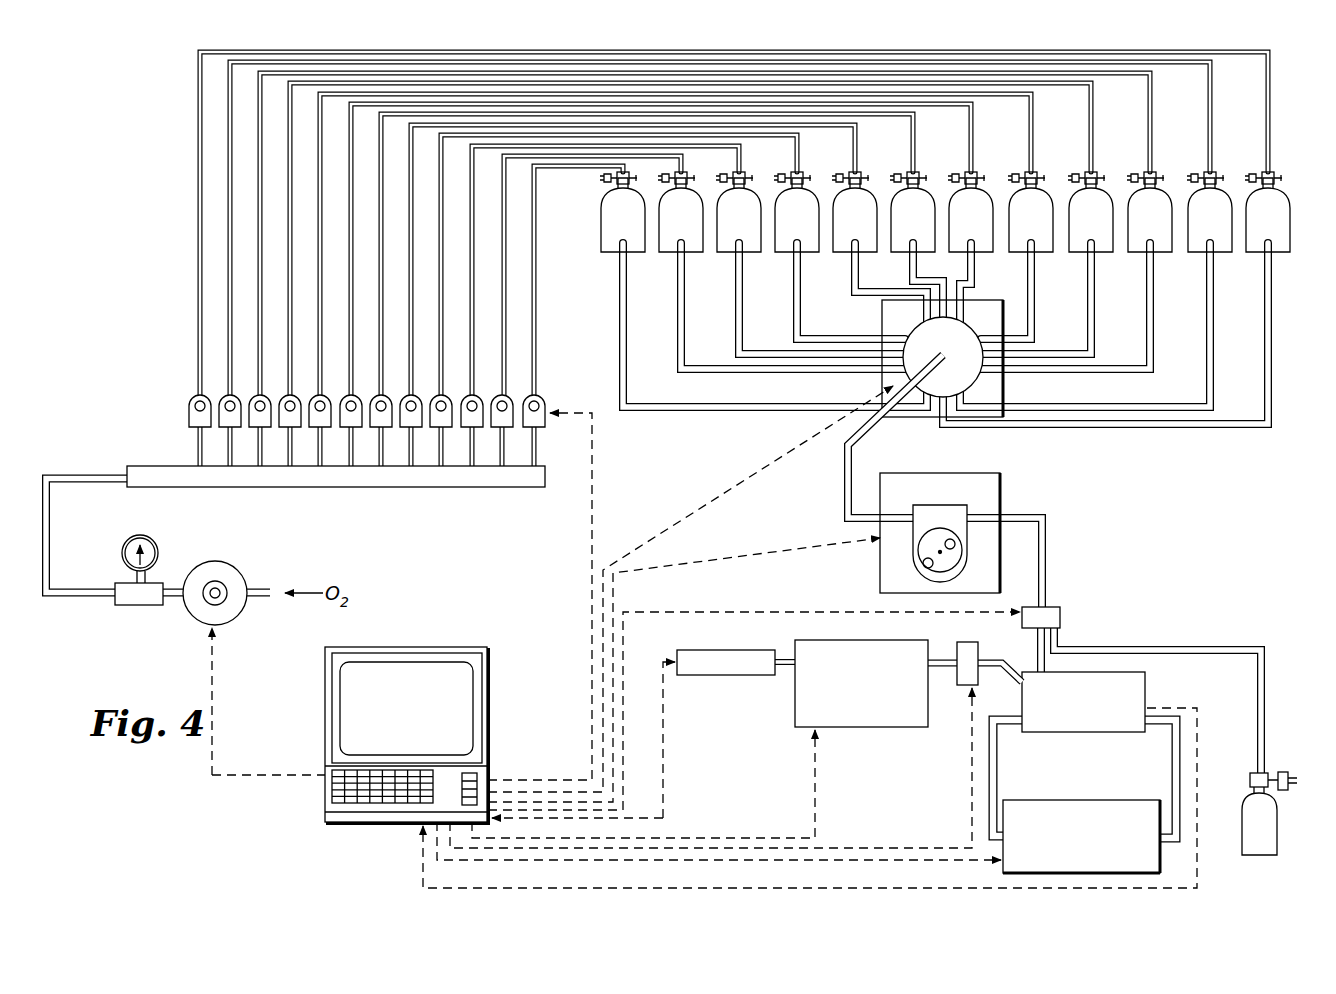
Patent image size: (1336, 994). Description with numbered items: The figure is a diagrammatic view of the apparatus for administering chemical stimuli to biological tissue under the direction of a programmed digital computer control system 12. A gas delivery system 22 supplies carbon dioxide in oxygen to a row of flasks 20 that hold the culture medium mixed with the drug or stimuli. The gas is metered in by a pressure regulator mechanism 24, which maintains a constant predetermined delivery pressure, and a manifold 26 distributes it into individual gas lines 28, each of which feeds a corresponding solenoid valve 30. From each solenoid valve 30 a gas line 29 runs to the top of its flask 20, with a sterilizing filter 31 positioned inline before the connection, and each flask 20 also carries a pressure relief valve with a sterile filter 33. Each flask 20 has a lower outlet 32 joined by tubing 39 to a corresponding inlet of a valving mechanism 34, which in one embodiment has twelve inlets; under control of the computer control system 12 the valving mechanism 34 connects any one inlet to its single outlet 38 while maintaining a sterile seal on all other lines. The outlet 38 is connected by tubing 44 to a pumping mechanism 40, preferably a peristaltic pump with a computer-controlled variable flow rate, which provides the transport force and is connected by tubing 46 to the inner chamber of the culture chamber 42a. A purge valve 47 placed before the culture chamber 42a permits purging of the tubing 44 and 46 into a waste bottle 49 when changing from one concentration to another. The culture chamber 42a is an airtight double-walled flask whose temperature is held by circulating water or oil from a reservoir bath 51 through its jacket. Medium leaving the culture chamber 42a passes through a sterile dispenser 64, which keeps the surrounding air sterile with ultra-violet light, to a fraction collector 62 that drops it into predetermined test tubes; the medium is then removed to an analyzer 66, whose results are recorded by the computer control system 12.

The computer control system 12 is at (492, 710).
The flask 20 is at (614, 227).
The gas delivery system 22 is at (352, 533).
The pressure regulator mechanism 24 is at (225, 562).
The manifold 26 is at (146, 466).
The gas line 28 is at (263, 468).
The gas line 29 is at (258, 240).
The solenoid valve 30 is at (230, 398).
The sterilizing filter 31 is at (906, 174).
The lower outlet 32 is at (735, 250).
The pressure relief valve with sterile filter 33 is at (782, 188).
The valving mechanism 34 is at (942, 358).
The outlet 38 is at (967, 335).
The tubing 39 is at (680, 325).
The pumping mechanism 40 is at (990, 492).
The culture chamber 42a is at (1130, 702).
The tubing 44 is at (846, 472).
The tubing 46 is at (1047, 545).
The purge valve 47 is at (1060, 612).
The waste bottle 49 is at (1250, 795).
The reservoir bath 51 is at (1081, 800).
The fraction collector 62 is at (885, 728).
The sterile dispenser 64 is at (963, 642).
The analyzer 66 is at (748, 677).